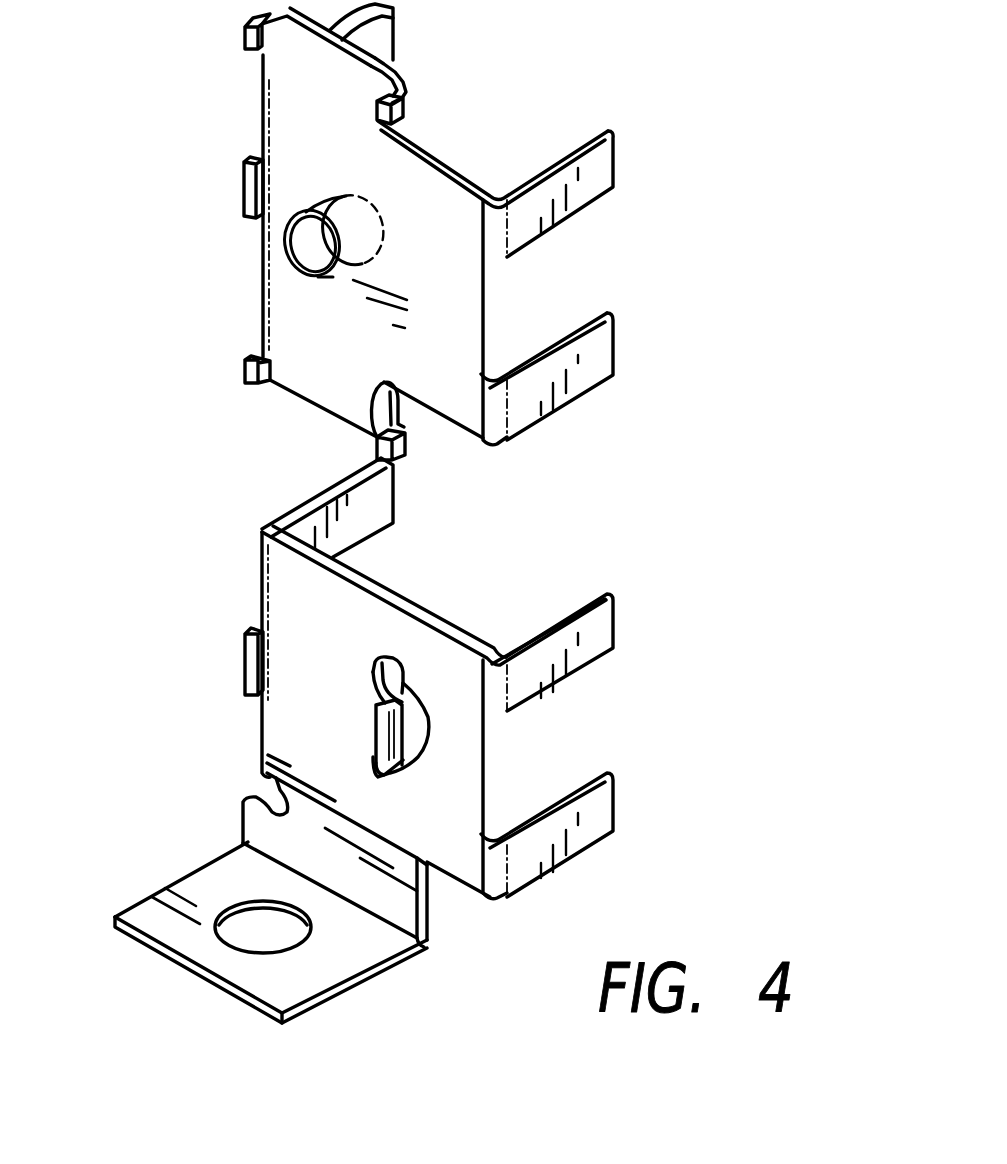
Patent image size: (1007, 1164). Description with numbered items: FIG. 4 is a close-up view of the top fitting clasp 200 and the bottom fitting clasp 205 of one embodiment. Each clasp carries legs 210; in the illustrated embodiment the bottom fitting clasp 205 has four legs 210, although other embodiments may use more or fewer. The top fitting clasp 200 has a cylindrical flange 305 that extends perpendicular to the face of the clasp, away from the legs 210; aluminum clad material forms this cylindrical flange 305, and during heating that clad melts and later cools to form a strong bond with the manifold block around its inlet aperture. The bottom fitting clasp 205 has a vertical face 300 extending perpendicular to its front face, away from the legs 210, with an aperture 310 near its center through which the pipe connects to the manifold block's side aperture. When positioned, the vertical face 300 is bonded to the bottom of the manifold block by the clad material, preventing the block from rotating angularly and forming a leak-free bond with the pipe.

The top fitting clasp 200 is at (167, 140).
The bottom fitting clasp 205 is at (200, 323).
The legs 210 is at (572, 145).
The vertical face 300 is at (224, 990).
The cylindrical flange 305 is at (313, 246).
The aperture 310 is at (263, 925).